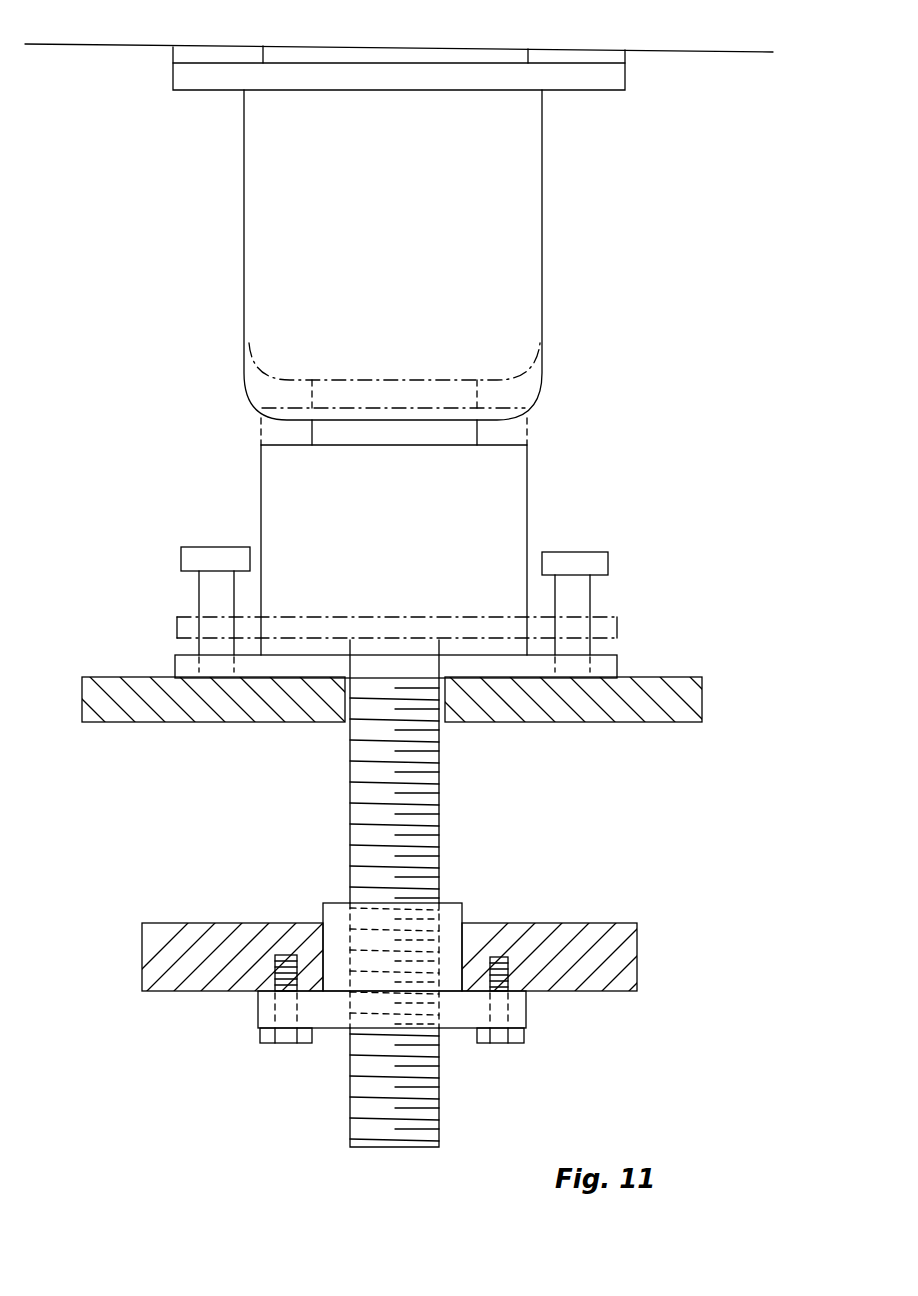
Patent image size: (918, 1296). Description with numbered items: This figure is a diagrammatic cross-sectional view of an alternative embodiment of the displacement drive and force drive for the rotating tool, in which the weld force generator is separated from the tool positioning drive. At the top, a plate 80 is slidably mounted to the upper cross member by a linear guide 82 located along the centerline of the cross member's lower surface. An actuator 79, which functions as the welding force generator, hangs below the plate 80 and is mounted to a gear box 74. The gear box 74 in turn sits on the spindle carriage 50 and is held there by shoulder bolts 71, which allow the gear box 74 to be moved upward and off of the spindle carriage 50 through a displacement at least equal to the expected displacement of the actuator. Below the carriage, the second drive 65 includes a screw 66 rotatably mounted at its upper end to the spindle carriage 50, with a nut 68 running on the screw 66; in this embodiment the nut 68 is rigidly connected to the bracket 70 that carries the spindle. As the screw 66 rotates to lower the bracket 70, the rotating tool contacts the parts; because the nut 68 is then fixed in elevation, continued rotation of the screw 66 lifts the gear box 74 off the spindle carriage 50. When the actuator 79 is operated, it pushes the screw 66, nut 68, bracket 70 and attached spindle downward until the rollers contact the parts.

The linear guide 82 is at (745, 53).
The plate 80 is at (612, 92).
The actuator 79 is at (543, 226).
The second drive 65 is at (444, 548).
The gear box 74 is at (520, 500).
The shoulder bolts 71 is at (205, 590).
The spindle carriage 50 is at (688, 708).
The screw 66 is at (439, 806).
The nut 68 is at (448, 922).
The bracket 70 is at (637, 948).